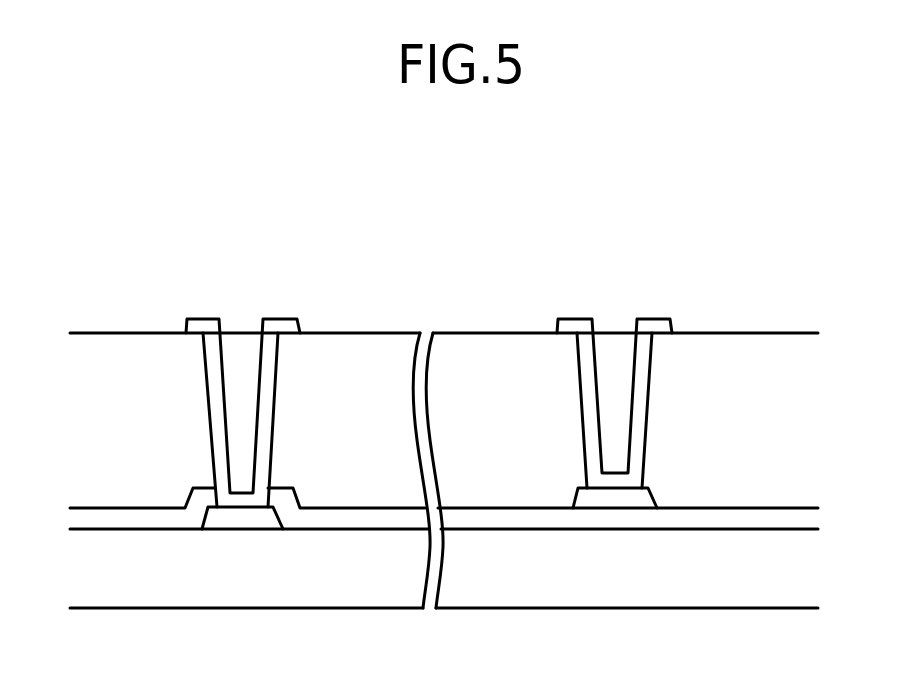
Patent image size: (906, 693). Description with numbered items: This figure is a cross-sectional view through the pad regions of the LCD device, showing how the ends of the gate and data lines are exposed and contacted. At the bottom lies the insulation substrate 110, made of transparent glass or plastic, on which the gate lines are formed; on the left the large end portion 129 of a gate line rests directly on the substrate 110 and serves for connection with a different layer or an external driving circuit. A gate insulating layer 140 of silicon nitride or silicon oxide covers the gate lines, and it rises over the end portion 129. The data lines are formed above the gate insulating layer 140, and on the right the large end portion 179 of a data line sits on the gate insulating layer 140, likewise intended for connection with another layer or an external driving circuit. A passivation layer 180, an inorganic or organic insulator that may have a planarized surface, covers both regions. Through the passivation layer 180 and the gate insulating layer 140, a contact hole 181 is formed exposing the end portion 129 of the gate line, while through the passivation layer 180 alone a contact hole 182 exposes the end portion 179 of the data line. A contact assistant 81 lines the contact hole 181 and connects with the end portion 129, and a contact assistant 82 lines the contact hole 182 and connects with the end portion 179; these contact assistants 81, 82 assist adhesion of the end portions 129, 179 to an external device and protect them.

The contact assistant 81 is at (200, 323).
The contact assistant 82 is at (573, 323).
The contact hole 181 is at (275, 387).
The contact hole 182 is at (647, 387).
The end portion of gate line 129 is at (243, 517).
The end portion of data line 179 is at (617, 498).
The gate insulating layer 140 is at (136, 518).
The passivation layer 180 is at (355, 430).
The insulation substrate 110 is at (705, 575).